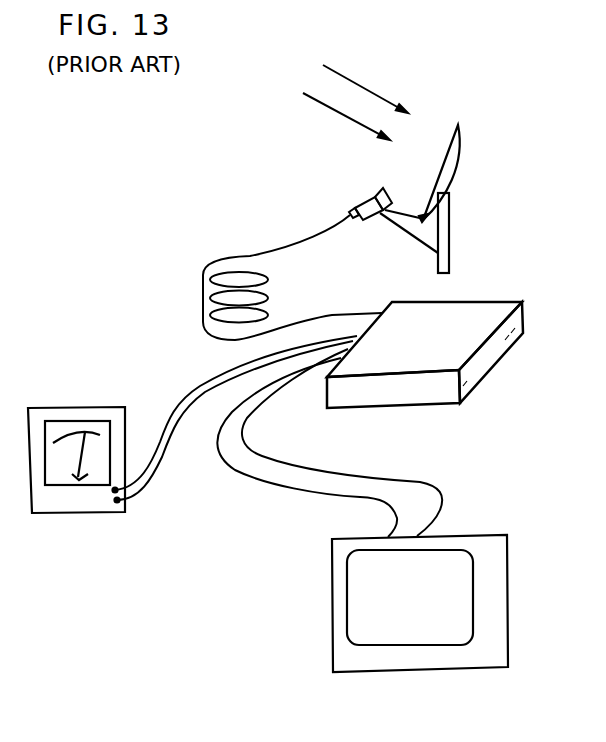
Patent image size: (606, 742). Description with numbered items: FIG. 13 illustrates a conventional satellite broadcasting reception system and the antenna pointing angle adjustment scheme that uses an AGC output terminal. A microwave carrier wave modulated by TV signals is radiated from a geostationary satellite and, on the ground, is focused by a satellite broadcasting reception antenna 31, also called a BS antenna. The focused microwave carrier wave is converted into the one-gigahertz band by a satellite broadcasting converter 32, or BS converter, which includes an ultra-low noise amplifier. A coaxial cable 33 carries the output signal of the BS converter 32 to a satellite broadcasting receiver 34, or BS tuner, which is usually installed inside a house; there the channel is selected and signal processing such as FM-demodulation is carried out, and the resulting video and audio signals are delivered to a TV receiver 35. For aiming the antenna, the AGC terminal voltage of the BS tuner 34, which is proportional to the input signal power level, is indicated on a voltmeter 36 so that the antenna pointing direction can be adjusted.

The satellite broadcasting reception antenna 31 is at (462, 147).
The satellite broadcasting converter 32 is at (370, 195).
The coaxial cable 33 is at (205, 268).
The satellite broadcasting receiver 34 is at (485, 377).
The TV receiver 35 is at (510, 617).
The voltmeter 36 is at (42, 513).